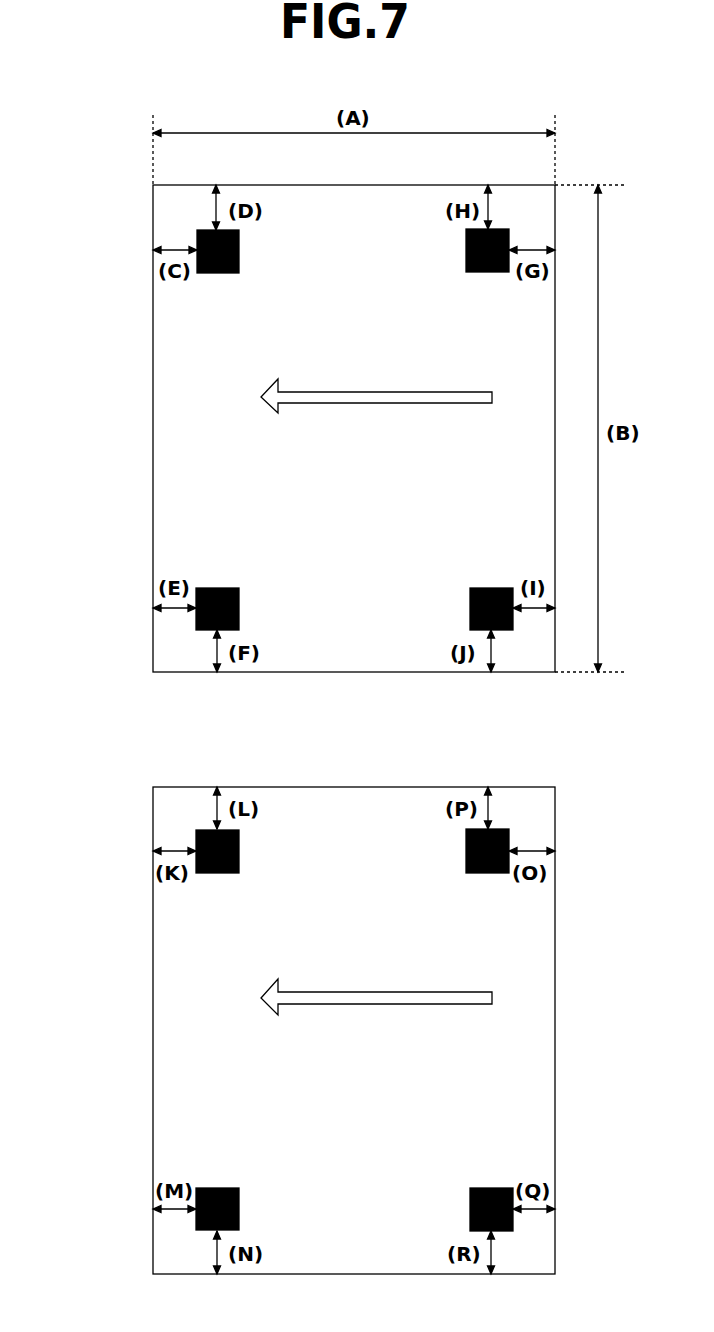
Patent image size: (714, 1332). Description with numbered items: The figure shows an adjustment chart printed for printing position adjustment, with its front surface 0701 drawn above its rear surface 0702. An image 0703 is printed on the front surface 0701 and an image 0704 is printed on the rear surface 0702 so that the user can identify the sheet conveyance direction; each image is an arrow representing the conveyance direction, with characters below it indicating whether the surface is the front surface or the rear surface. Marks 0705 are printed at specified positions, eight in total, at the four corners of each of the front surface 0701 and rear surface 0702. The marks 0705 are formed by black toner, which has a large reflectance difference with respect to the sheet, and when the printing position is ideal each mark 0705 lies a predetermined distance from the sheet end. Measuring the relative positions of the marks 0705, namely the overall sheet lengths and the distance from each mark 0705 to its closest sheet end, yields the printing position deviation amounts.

The front surface 0701 is at (153, 348).
The rear surface 0702 is at (153, 963).
The image 0703 is at (373, 391).
The image 0704 is at (375, 990).
The marks 0705 is at (217, 275).